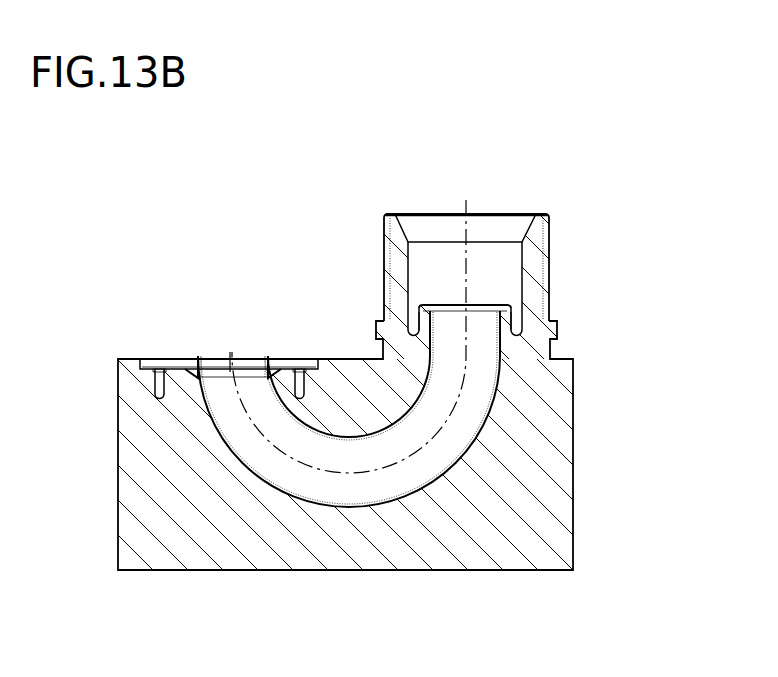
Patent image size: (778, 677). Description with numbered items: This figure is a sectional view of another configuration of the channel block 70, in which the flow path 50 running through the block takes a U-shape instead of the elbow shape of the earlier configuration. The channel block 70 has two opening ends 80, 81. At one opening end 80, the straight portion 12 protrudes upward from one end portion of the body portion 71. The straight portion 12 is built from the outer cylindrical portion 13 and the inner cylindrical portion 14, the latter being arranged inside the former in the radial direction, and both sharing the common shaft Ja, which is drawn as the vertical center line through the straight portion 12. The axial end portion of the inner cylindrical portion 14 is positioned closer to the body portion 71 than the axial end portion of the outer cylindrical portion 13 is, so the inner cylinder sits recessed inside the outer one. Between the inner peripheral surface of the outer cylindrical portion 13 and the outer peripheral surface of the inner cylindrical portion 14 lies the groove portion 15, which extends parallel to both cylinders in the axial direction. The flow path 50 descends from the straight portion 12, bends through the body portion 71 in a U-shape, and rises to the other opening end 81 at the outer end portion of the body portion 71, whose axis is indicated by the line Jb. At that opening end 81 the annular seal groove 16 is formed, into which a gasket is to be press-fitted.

The straight portion 12 is at (535, 275).
The outer cylindrical portion 13 is at (530, 257).
The inner cylindrical portion 14 is at (546, 324).
The groove portion 15 is at (417, 297).
The annular seal groove 16 is at (228, 331).
The flow path 50 is at (417, 428).
The channel block 70 is at (225, 267).
The body portion 71 is at (518, 562).
The opening end 80 is at (535, 224).
The opening end 81 is at (287, 345).
The common shaft Ja is at (355, 321).
The axis of pipe lower end Jb is at (225, 347).